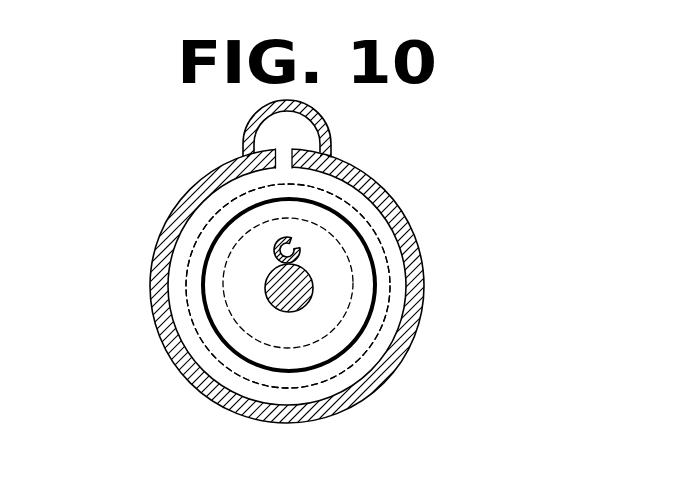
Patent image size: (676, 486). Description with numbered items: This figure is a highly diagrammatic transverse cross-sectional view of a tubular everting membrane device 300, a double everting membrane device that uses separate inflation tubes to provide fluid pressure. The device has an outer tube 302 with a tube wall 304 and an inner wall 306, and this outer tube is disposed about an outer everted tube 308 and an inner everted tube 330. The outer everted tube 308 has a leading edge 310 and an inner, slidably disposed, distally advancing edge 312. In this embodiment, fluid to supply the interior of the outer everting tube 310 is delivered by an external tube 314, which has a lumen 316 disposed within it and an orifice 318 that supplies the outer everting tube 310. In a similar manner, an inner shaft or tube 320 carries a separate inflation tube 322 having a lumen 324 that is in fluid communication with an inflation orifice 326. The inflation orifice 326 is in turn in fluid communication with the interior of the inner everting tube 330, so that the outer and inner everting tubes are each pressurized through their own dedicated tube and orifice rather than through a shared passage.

The tubular everting membrane device 300 is at (456, 122).
The outer tube 302 is at (389, 193).
The tube wall 304 is at (414, 258).
The inner wall 306 is at (394, 299).
The outer everted tube 308 is at (372, 338).
The leading edge of outer everted tube 310 is at (268, 388).
The distally advancing edge 312 is at (222, 371).
The external tube 314 is at (259, 110).
The lumen 316 is at (266, 132).
The orifice 318 is at (298, 141).
The inner shaft or tube 320 is at (236, 358).
The inflation tube 322 is at (283, 293).
The lumen 324 is at (274, 251).
The inflation orifice 326 is at (280, 240).
The inner everted tube 330 is at (260, 213).